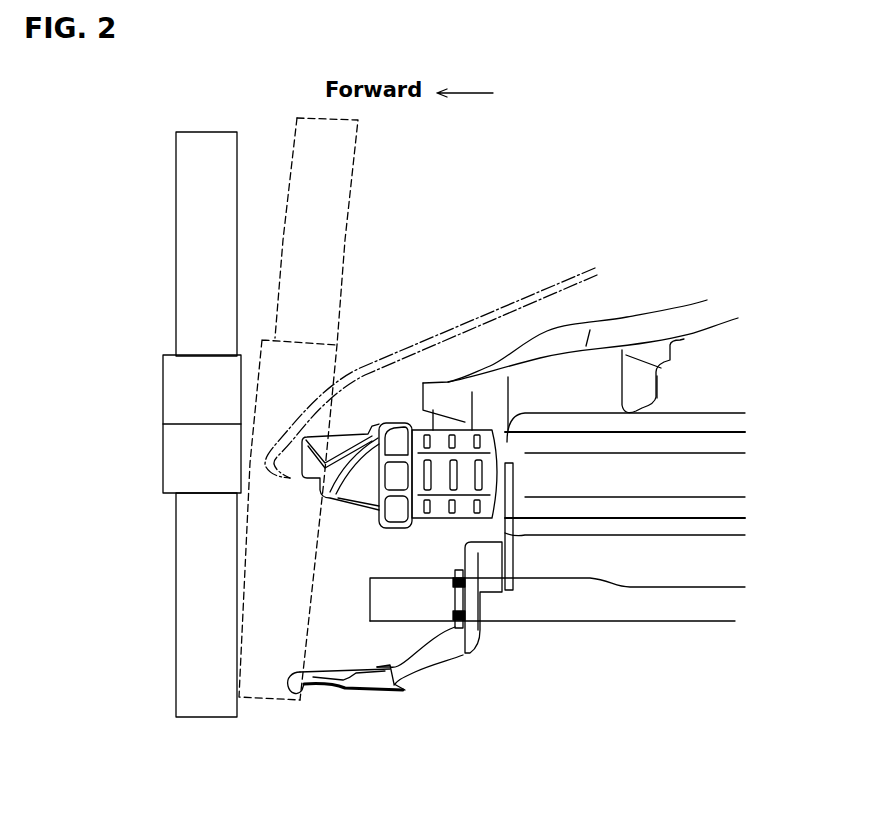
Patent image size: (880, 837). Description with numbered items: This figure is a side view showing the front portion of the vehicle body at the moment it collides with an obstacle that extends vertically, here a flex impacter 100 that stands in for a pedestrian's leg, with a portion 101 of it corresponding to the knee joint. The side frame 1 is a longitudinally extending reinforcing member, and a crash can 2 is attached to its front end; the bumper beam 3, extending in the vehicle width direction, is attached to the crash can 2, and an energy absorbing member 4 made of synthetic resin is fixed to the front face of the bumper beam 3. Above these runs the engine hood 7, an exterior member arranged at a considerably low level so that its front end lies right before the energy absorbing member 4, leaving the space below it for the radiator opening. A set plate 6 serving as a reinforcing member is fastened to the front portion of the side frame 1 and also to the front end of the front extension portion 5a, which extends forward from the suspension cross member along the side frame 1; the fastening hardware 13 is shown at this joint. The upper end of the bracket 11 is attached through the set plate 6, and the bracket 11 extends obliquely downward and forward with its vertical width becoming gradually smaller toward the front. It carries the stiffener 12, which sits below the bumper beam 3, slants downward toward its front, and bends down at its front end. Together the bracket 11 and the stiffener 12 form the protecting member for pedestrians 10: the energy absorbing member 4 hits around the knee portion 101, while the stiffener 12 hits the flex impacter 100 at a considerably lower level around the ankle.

The flex impacter 100 is at (313, 125).
The knee joint portion 101 is at (312, 398).
The engine hood 7 is at (558, 282).
The side frame 1 is at (630, 480).
The crash can 2 is at (458, 440).
The bumper beam 3 is at (393, 432).
The energy absorbing member 4 is at (348, 458).
The front extension portion 5a is at (582, 612).
The set plate 6 is at (487, 562).
The protecting member for pedestrians 10 is at (375, 722).
The bracket 11 is at (427, 663).
The stiffener 12 is at (332, 675).
The fastening bolts 13 is at (453, 615).